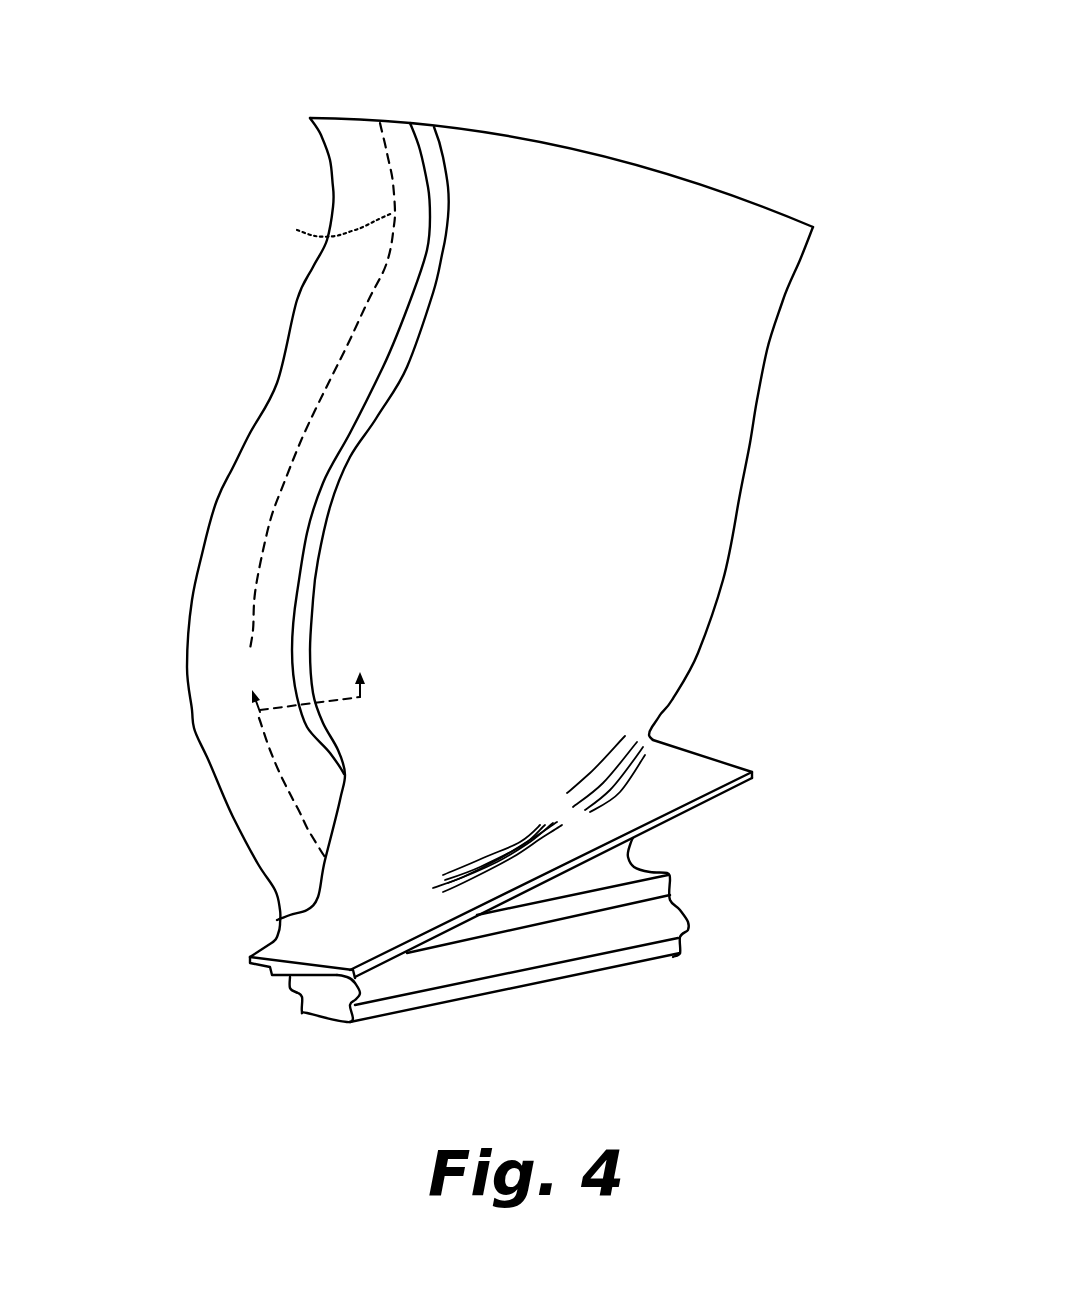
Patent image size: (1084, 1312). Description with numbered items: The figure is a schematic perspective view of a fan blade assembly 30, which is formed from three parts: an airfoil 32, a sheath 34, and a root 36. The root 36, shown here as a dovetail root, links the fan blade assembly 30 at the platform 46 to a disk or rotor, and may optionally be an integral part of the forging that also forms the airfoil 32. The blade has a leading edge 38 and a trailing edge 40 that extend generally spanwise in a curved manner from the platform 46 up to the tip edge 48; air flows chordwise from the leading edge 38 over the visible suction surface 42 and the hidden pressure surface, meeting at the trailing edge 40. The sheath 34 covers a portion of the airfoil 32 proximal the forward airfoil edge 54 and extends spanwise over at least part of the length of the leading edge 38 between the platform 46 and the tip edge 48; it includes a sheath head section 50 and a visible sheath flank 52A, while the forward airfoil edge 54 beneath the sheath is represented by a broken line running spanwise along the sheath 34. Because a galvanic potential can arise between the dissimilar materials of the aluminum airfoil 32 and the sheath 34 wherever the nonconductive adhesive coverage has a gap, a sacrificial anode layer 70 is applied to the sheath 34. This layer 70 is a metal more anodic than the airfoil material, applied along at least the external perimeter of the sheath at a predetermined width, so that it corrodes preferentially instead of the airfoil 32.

The fan blade assembly 30 is at (826, 47).
The airfoil 32 is at (862, 339).
The sheath 34 is at (160, 468).
The root 36 is at (715, 898).
The leading edge 38 is at (193, 718).
The trailing edge 40 is at (750, 443).
The suction surface 42 is at (613, 550).
The platform 46 is at (523, 840).
The tip edge 48 is at (542, 140).
The sheath head section 50 is at (302, 338).
The sheath flank 52A is at (400, 133).
The forward airfoil edge 54 is at (297, 230).
The sacrificial anode layer 70 is at (312, 547).